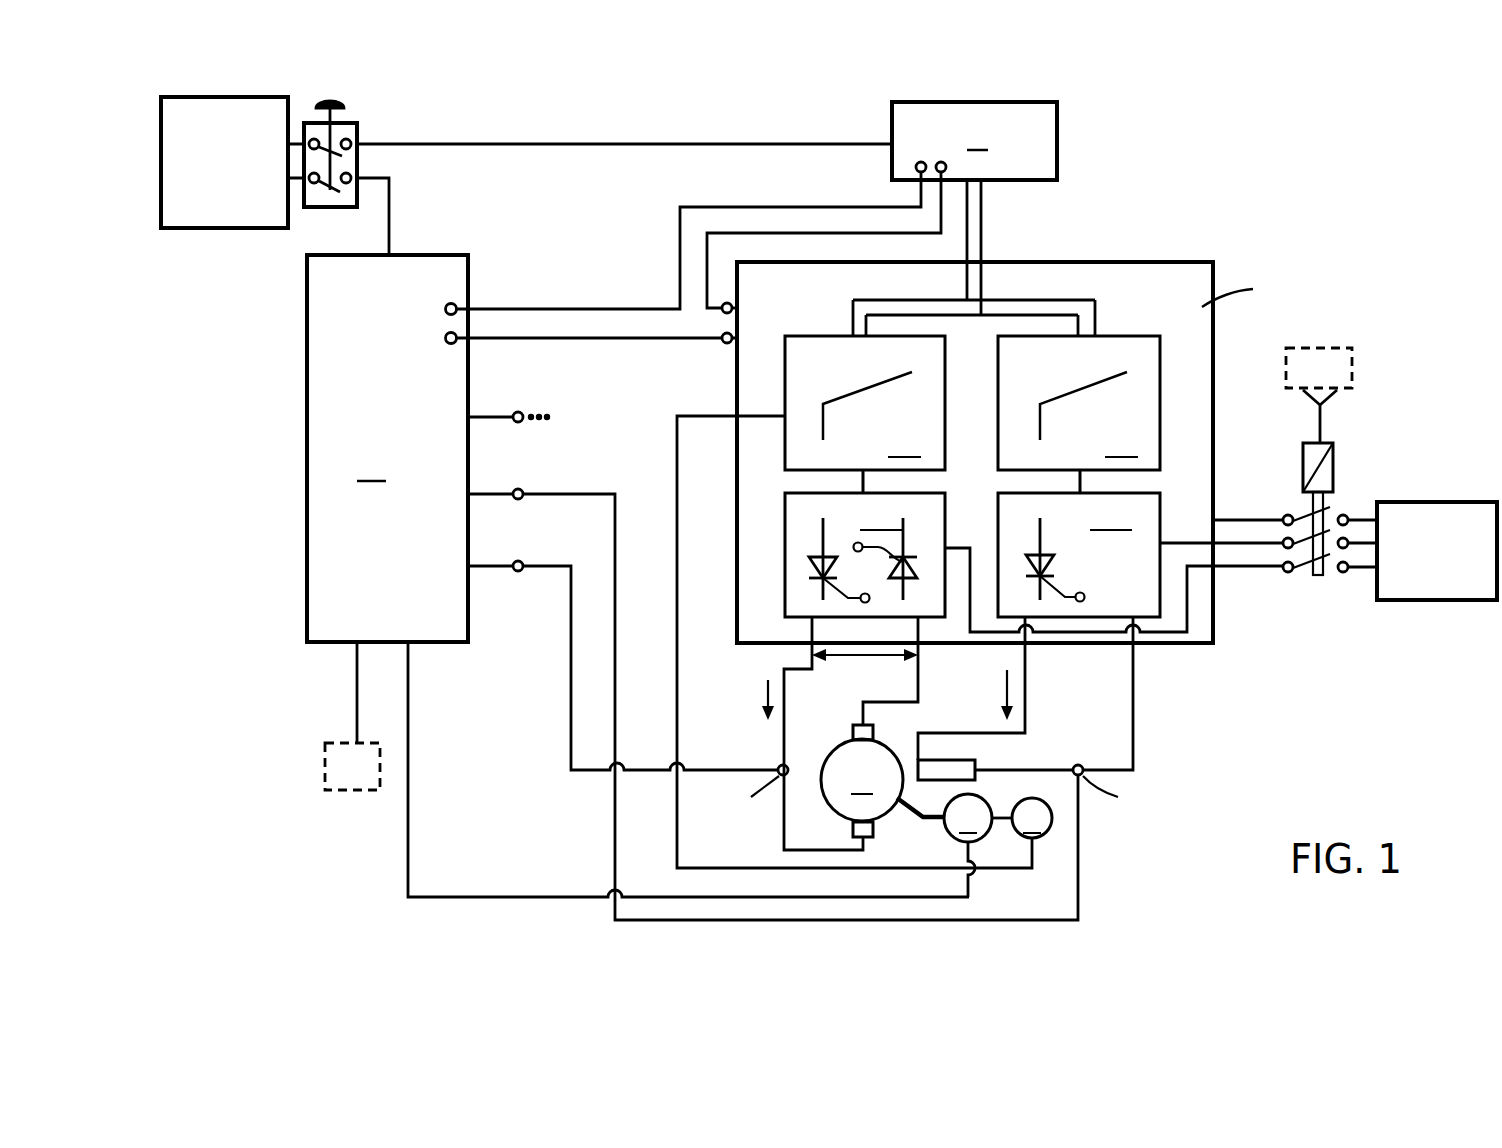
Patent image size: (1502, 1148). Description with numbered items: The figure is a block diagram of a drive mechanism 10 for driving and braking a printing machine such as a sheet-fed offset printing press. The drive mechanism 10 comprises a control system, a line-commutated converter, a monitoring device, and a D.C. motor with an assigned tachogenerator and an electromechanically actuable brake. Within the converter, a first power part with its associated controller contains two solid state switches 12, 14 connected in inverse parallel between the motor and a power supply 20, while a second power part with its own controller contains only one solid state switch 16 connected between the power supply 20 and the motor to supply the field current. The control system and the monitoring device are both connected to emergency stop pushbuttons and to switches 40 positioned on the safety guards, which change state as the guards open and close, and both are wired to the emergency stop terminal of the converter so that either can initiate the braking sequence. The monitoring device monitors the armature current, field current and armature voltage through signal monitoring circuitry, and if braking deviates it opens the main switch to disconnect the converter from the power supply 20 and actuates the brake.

The drive mechanism 10 is at (234, 870).
The solid state switch 12 is at (813, 558).
The solid state switch 14 is at (922, 562).
The solid state switch 16 is at (1049, 566).
The power supply 20 is at (1427, 600).
The switches positioned on the safety guards 40 is at (193, 228).